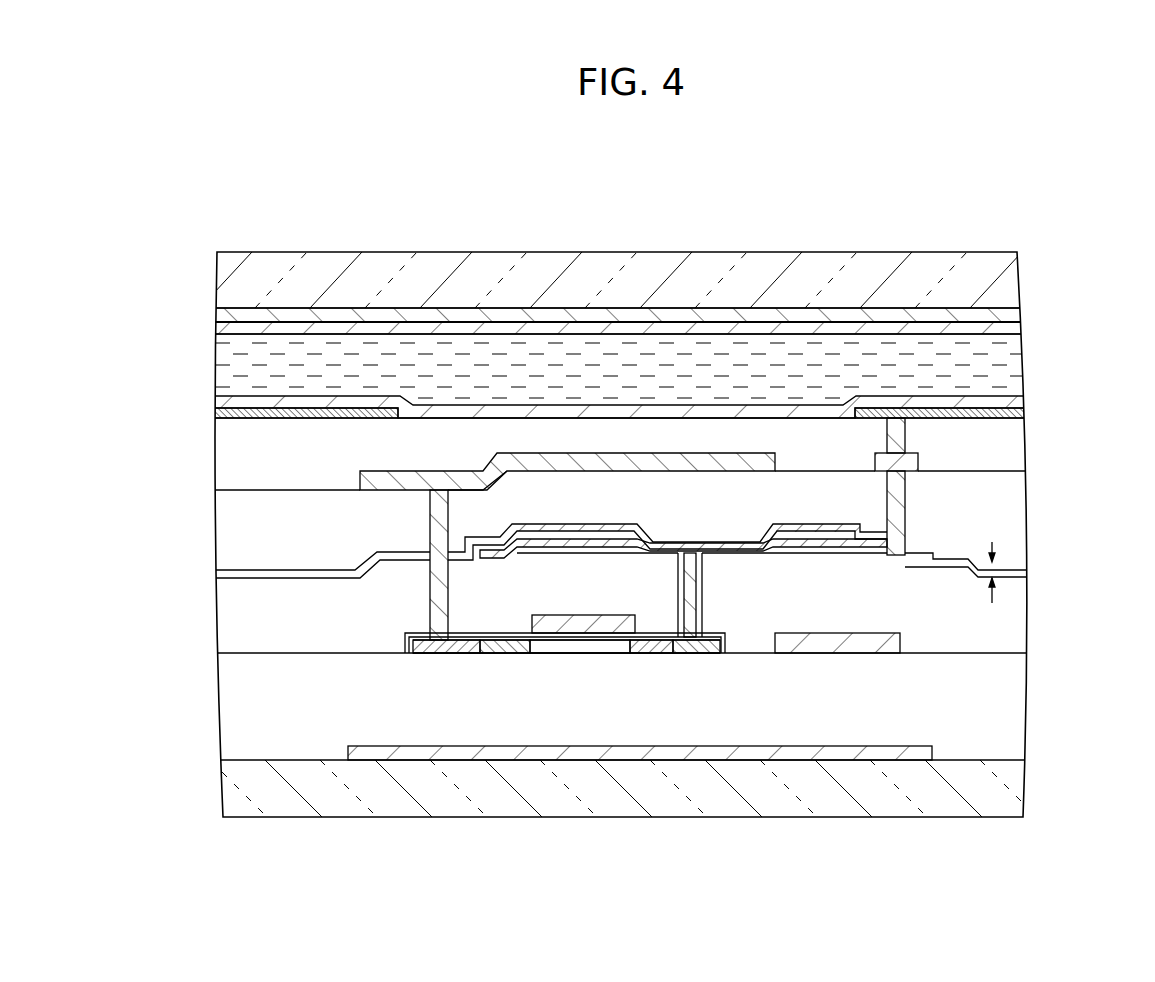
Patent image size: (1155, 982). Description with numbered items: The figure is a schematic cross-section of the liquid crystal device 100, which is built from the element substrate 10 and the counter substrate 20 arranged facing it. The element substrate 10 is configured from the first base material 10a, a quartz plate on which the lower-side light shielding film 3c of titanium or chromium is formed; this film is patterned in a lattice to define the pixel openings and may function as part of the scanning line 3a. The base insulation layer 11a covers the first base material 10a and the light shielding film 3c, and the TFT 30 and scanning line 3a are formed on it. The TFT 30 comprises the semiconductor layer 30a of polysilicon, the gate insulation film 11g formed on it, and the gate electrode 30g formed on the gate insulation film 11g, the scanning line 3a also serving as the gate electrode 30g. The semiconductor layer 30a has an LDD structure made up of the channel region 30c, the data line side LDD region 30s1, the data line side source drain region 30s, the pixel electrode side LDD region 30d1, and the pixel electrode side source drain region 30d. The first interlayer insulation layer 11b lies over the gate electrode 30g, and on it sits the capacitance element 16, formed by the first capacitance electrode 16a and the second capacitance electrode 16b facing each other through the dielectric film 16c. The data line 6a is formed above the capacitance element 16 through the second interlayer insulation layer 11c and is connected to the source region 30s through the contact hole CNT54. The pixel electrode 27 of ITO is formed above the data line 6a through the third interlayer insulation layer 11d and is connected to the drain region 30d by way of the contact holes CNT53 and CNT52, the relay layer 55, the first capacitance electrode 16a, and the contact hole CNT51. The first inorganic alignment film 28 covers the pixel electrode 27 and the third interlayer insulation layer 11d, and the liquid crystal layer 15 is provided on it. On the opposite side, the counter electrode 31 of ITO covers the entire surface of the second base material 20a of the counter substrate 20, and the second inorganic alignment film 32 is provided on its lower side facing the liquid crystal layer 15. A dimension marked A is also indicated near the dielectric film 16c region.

The liquid crystal device 100 is at (885, 196).
The counter substrate 20 is at (1100, 255).
The second base material 20a is at (1018, 268).
The counter electrode 31 is at (1016, 312).
The second inorganic alignment film 32 is at (1016, 328).
The liquid crystal layer 15 is at (1016, 362).
The first inorganic alignment film 28 is at (1016, 404).
The pixel electrode 27 is at (208, 413).
The element substrate 10 is at (1100, 388).
The first base material 10a is at (1020, 790).
The base insulation layer 11a is at (1020, 720).
The first interlayer insulation layer 11b is at (1020, 620).
The second interlayer insulation layer 11c is at (1014, 522).
The third interlayer insulation layer 11d is at (1010, 440).
The gate insulation film 11g is at (498, 633).
The relay layer 55 is at (920, 455).
The data line 6a is at (714, 465).
The capacitance element 16 is at (538, 551).
The first capacitance electrode 16a is at (653, 558).
The second capacitance electrode 16b is at (637, 524).
The dielectric film 16c is at (306, 572).
The TFT 30 is at (737, 702).
The data line side source drain region 30s is at (433, 654).
The data line side LDD region 30s1 is at (503, 654).
The channel region 30c is at (577, 654).
The pixel electrode side LDD region 30d1 is at (640, 654).
The pixel electrode side source drain region 30d is at (700, 654).
The gate electrode 30g is at (583, 614).
The semiconductor layer 30a is at (716, 631).
The scanning line 3a is at (864, 632).
The lower-side light shielding film 3c is at (868, 745).
The contact hole CNT51 is at (703, 575).
The contact hole CNT52 is at (887, 497).
The contact hole CNT53 is at (887, 440).
The contact hole CNT54 is at (430, 614).
The thickness dimension A is at (982, 579).